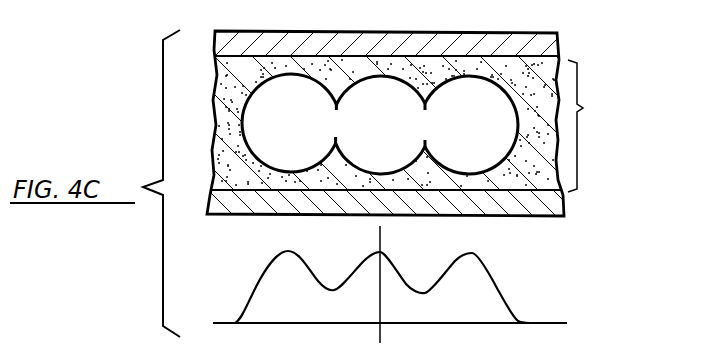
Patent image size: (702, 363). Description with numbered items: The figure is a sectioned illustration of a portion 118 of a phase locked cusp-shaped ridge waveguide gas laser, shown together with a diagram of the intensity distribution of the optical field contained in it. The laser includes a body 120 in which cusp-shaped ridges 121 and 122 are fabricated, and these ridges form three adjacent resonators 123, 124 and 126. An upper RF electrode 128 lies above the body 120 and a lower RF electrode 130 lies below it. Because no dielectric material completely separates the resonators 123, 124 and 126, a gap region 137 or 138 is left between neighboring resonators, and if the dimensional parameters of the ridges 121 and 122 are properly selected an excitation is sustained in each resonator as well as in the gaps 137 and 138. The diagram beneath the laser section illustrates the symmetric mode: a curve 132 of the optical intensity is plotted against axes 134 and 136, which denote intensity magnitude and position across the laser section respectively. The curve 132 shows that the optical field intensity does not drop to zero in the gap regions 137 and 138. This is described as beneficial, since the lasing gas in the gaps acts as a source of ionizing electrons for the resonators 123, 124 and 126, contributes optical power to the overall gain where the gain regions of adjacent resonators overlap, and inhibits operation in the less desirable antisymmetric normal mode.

The portion of phase locked cusp-shaped ridge waveguide gas laser 118 is at (592, 106).
The body 120 is at (562, 130).
The cusp-shaped ridge 121 is at (328, 99).
The cusp-shaped ridge 122 is at (422, 146).
The resonator 123 is at (302, 151).
The resonator 124 is at (395, 130).
The resonator 126 is at (490, 153).
The upper RF electrode 128 is at (530, 25).
The lower RF electrode 130 is at (517, 223).
The curve of the optical intensity 132 is at (493, 276).
The axis 134 is at (382, 238).
The axis 136 is at (540, 327).
The gap region 137 is at (334, 121).
The gap region 138 is at (425, 125).